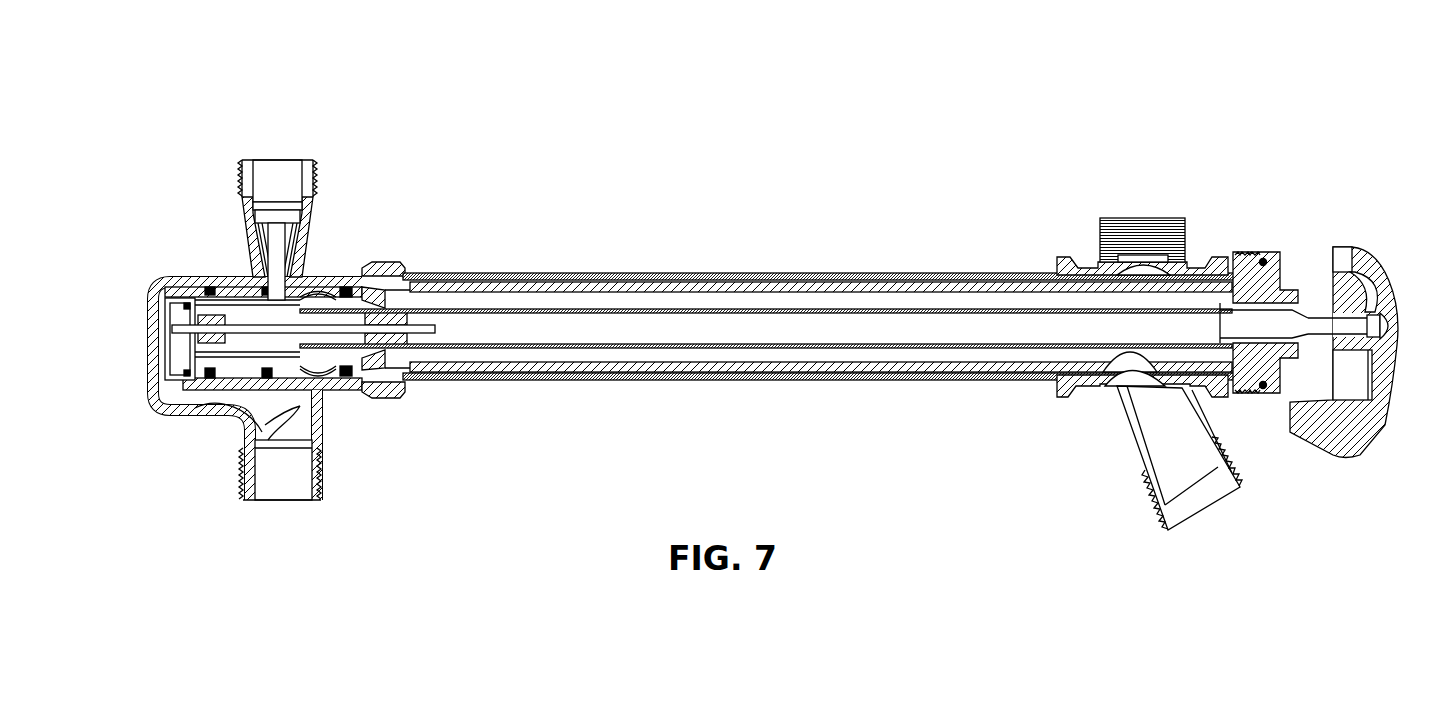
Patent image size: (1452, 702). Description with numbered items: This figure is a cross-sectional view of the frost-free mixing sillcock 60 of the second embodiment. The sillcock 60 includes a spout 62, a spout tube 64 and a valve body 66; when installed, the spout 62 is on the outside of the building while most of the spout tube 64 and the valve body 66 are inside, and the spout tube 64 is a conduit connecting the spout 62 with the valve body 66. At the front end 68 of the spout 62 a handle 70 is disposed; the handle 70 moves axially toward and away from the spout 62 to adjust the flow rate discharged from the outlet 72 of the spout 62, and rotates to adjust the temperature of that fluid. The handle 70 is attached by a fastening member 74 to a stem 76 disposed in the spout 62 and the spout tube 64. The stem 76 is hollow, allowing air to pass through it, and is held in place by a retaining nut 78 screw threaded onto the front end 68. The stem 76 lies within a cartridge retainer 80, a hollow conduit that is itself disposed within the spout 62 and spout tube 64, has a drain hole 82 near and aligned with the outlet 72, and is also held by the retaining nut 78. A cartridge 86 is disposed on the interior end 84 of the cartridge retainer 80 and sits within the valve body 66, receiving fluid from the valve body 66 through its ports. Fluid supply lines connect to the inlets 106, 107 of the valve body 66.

The frost-free mixing sillcock 60 is at (703, 200).
The spout 62 is at (1168, 235).
The spout tube 64 is at (797, 372).
The valve body 66 is at (305, 262).
The front end 68 is at (1250, 252).
The handle 70 is at (1385, 372).
The outlet 72 is at (1205, 500).
The fastening member 74 is at (1385, 325).
The stem 76 is at (903, 340).
The retaining nut 78 is at (1248, 395).
The cartridge retainer 80 is at (682, 365).
The drain hole 82 is at (1132, 355).
The interior end 84 is at (432, 290).
The cartridge 86 is at (190, 272).
The inlet 106 is at (283, 175).
The inlet 107 is at (275, 475).